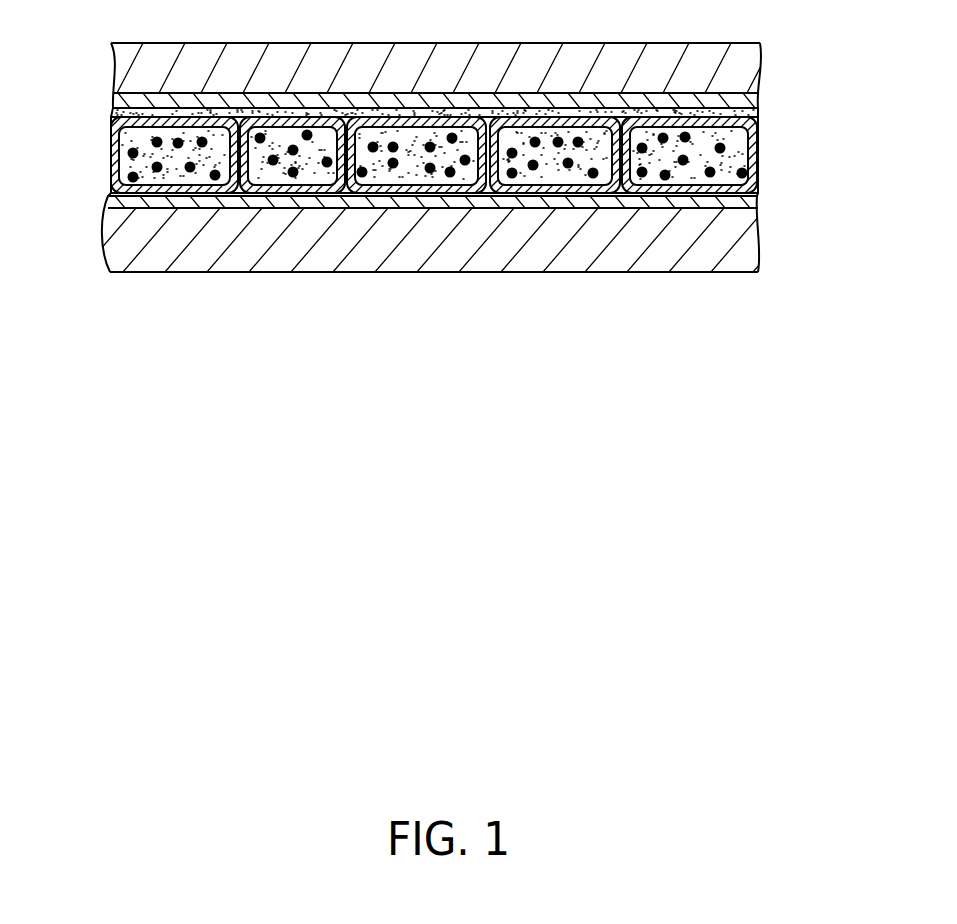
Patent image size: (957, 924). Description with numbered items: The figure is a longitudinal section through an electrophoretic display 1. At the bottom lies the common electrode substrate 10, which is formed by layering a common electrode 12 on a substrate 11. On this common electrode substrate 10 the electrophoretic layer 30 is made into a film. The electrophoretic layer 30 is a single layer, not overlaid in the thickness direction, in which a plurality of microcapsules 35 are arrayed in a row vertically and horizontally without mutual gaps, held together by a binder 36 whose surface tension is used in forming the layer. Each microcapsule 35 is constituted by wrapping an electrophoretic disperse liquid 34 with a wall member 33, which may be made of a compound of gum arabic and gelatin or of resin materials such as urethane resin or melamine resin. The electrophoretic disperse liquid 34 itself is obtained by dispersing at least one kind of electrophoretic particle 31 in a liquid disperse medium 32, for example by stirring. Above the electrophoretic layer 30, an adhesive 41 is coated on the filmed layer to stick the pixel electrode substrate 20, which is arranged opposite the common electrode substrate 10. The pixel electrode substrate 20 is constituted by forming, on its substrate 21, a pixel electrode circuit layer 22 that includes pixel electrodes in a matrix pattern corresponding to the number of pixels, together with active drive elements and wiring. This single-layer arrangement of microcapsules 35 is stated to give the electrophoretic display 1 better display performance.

The electrophoretic display 1 is at (413, 423).
The common electrode substrate 10 is at (855, 197).
The substrate 11 is at (753, 248).
The common electrode 12 is at (753, 203).
The pixel electrode substrate 20 is at (855, 62).
The substrate 21 is at (752, 75).
The pixel electrode circuit layer 22 is at (753, 103).
The electrophoretic layer 30 is at (433, 250).
The electrophoretic particles 31 is at (710, 177).
The liquid disperse medium 32 is at (683, 150).
The wall member 33 is at (634, 194).
The electrophoretic disperse liquid 34 is at (433, 250).
The microcapsule 35 is at (620, 193).
The binder 36 is at (232, 196).
The adhesive 41 is at (112, 113).